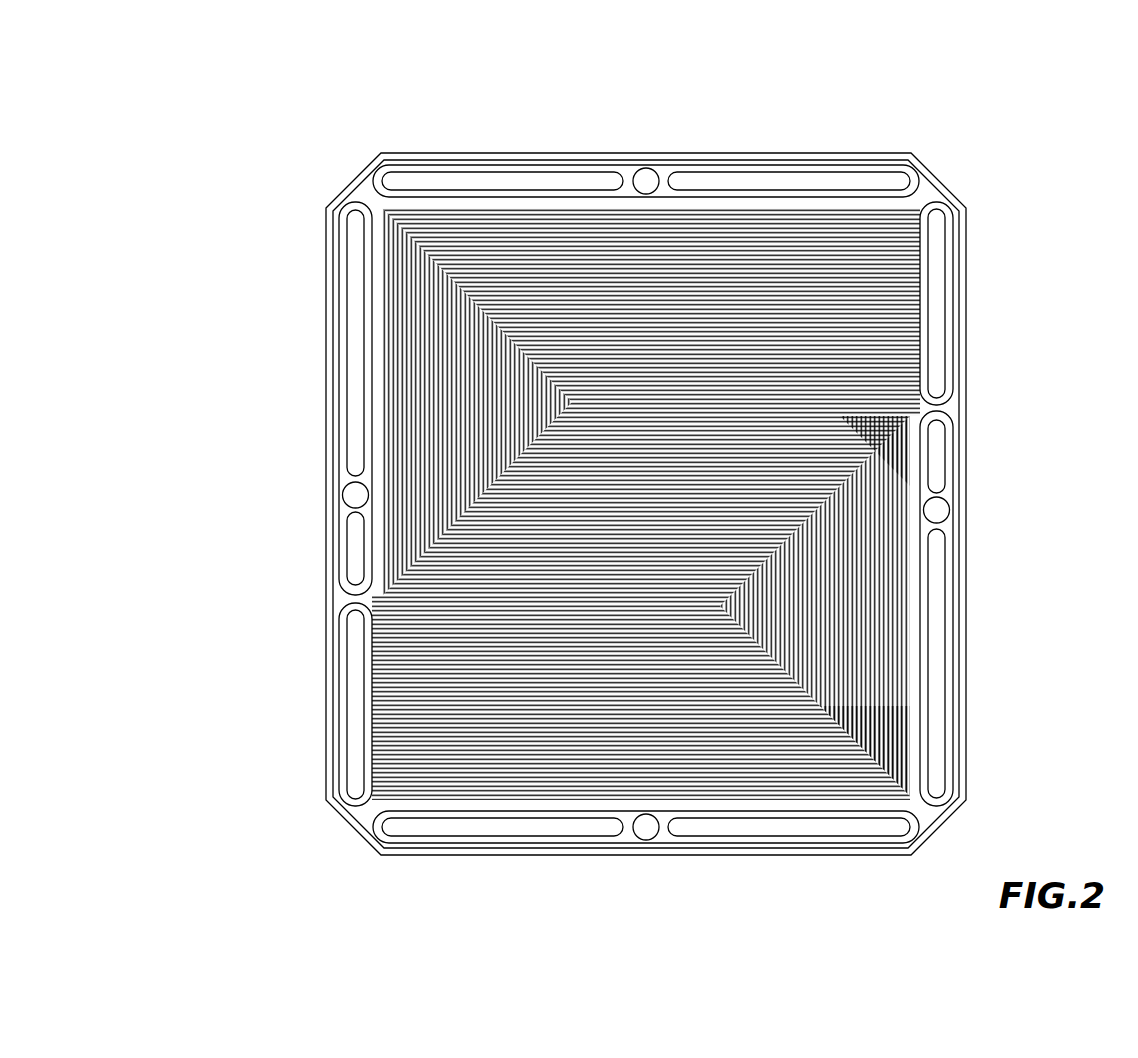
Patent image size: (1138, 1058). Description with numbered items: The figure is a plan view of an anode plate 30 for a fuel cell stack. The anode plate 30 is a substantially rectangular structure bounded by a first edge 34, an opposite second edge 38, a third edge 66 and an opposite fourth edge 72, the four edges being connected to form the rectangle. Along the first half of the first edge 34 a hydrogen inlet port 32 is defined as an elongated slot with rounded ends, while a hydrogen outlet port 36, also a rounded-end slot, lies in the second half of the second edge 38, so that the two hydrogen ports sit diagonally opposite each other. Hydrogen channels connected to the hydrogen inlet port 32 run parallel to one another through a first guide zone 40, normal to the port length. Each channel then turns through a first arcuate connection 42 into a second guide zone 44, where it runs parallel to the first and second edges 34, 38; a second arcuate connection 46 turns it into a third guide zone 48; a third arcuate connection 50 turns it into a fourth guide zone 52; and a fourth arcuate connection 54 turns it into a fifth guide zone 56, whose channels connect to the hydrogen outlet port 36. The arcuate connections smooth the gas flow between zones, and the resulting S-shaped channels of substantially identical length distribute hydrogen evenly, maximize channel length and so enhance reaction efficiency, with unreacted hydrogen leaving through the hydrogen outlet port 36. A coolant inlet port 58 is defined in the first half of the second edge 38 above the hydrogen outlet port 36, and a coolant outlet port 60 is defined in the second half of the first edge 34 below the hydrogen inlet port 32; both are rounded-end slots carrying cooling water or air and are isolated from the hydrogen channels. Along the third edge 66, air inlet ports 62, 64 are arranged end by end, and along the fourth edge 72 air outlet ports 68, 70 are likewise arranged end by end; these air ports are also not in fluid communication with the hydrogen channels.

The anode plate 30 is at (224, 901).
The hydrogen inlet port 32 is at (935, 325).
The first edge 34 is at (1025, 188).
The hydrogen outlet port 36 is at (350, 695).
The second edge 38 is at (250, 194).
The first guide zone 40 is at (872, 277).
The first arcuate connection 42 is at (467, 317).
The second guide zone 44 is at (412, 396).
The second arcuate connection 46 is at (455, 468).
The third guide zone 48 is at (860, 422).
The third arcuate connection 50 is at (830, 526).
The fourth guide zone 52 is at (880, 590).
The fourth arcuate connection 54 is at (858, 668).
The fifth guide zone 56 is at (385, 655).
The coolant inlet port 58 is at (357, 266).
The coolant outlet port 60 is at (940, 740).
The air inlet port 62 is at (400, 182).
The air inlet port 64 is at (920, 166).
The third edge 66 is at (362, 137).
The air outlet port 68 is at (390, 828).
The air outlet port 70 is at (905, 828).
The fourth edge 72 is at (370, 878).